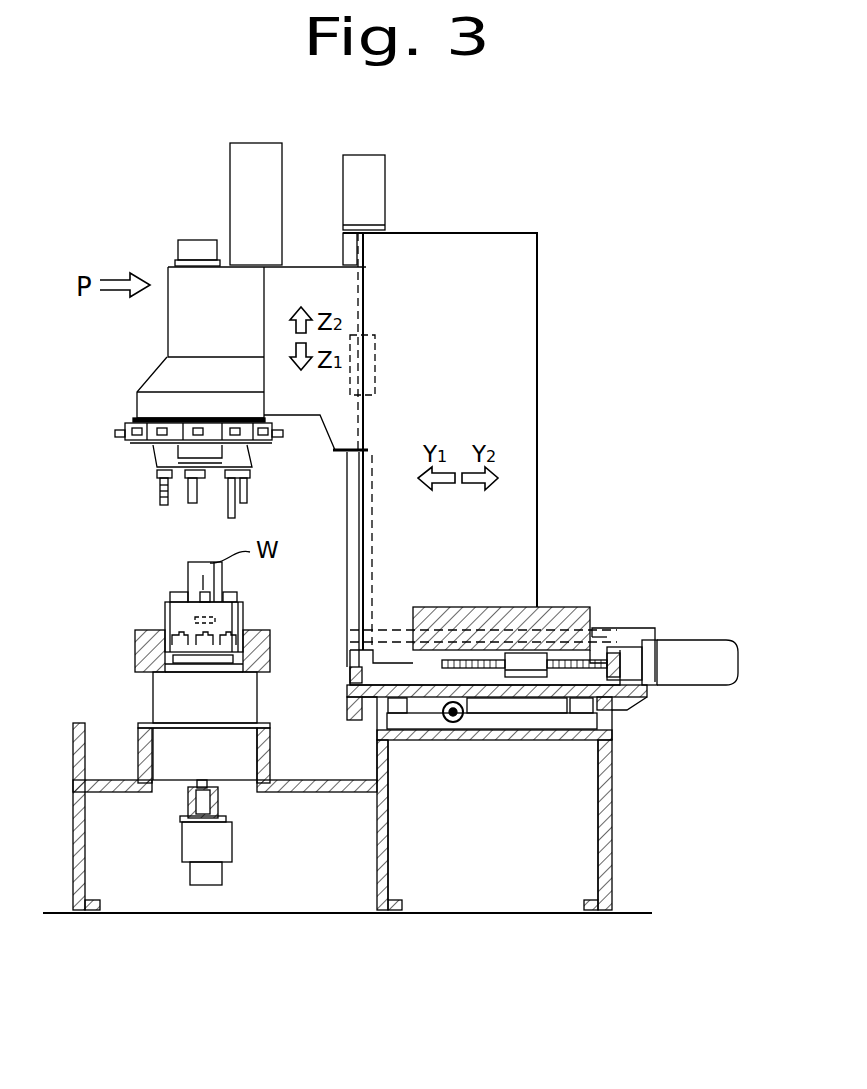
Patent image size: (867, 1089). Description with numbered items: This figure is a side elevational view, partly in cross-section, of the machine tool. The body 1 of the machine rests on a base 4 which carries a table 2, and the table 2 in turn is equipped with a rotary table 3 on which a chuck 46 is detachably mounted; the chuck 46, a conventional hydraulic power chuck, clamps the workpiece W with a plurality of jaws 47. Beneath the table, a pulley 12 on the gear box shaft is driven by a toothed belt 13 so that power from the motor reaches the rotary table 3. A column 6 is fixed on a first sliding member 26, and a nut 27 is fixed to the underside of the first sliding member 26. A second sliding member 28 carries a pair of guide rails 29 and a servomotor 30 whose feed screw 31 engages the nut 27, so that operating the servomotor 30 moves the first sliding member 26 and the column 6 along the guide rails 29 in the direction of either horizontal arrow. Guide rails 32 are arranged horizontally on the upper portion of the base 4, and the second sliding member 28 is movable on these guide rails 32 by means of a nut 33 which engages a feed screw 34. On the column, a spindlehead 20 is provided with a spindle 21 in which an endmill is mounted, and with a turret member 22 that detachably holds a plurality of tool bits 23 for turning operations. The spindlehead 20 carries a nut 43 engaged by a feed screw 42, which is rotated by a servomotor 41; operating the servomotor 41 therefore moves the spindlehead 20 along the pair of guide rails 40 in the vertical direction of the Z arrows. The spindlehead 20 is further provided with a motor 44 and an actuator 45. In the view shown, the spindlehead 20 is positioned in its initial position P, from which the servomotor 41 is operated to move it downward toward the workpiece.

The body 1 is at (543, 460).
The table 2 is at (135, 652).
The rotary table 3 is at (212, 647).
The base 4 is at (383, 848).
The column 6 is at (520, 355).
The pulley 12 is at (232, 855).
The toothed belt 13 is at (217, 798).
The spindlehead 20 is at (306, 267).
The spindle 21 is at (180, 452).
The turret member 22 is at (127, 427).
The tool bits 23 is at (160, 430).
The first sliding member 26 is at (590, 630).
The nut 27 is at (530, 625).
The second sliding member 28 is at (645, 697).
The guide rails 29 is at (600, 632).
The servomotor 30 is at (688, 645).
The feed screw 31 is at (602, 652).
The guide rails 32 is at (350, 723).
The nut 33 is at (465, 710).
The feed screw 34 is at (455, 730).
The guide rails 40 is at (348, 513).
The servomotor 41 is at (378, 173).
The feed screw 42 is at (365, 278).
The nut 43 is at (375, 372).
The motor 44 is at (257, 146).
The actuator 45 is at (197, 245).
The chuck 46 is at (243, 617).
The jaws 47 is at (227, 593).